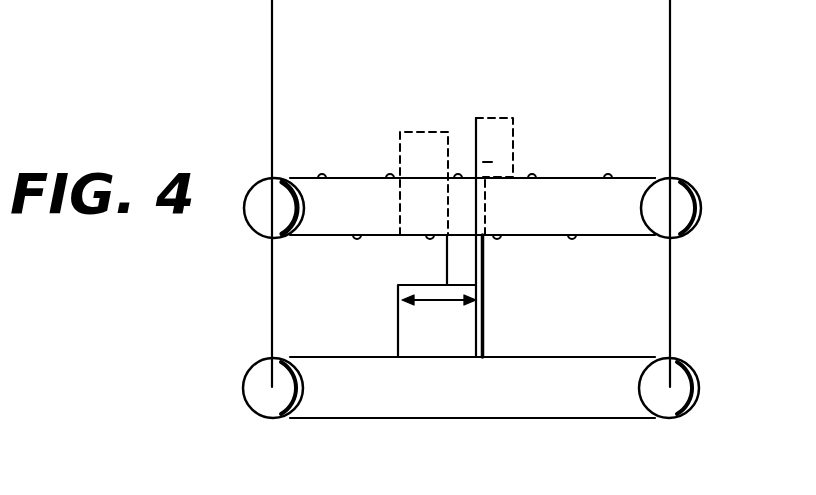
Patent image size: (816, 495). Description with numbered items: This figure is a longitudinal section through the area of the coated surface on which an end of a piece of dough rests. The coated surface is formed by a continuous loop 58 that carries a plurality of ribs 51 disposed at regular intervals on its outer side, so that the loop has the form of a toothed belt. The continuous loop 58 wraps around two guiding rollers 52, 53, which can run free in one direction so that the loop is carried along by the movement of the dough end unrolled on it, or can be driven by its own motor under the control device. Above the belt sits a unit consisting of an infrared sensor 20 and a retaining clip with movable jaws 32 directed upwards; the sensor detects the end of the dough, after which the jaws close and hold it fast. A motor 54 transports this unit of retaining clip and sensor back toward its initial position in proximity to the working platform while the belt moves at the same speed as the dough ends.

The infrared sensor 20 is at (417, 131).
The movable jaw 32 is at (500, 116).
The rib 51 is at (530, 176).
The guiding roller 52 is at (690, 208).
The guiding roller 53 is at (255, 200).
The motor 54 is at (418, 322).
The continuous loop 58 is at (630, 177).